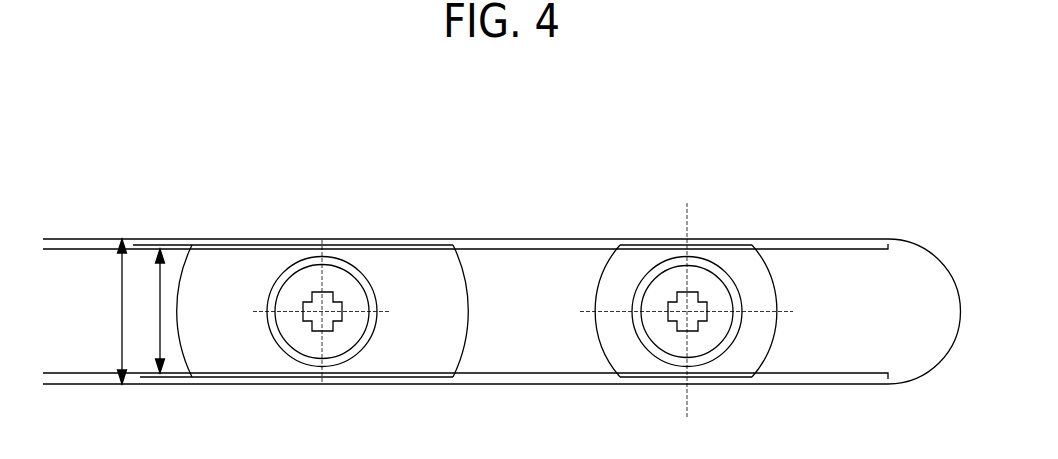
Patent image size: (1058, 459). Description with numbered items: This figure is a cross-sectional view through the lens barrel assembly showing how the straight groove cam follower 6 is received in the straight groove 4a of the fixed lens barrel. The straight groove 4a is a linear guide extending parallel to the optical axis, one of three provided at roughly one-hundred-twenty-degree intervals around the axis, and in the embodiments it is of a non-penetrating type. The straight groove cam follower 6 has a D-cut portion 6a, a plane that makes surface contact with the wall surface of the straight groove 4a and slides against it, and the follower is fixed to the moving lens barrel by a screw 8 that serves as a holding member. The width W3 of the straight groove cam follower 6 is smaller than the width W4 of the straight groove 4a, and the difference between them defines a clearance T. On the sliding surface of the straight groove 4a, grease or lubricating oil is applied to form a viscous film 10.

The viscous film 10 is at (63, 250).
The straight groove 4a is at (94, 240).
The D-cut portion 6a is at (233, 245).
The straight groove cam follower 6 is at (407, 257).
The screw 8 is at (343, 284).
The width of the straight groove cam follower W3 is at (147, 311).
The width of the straight groove W4 is at (108, 311).